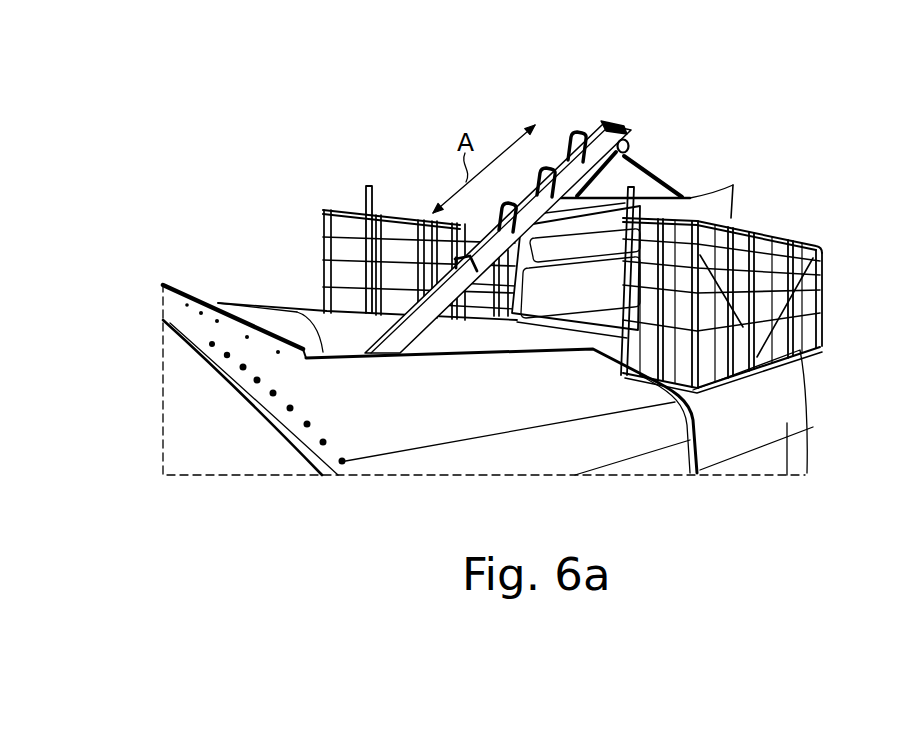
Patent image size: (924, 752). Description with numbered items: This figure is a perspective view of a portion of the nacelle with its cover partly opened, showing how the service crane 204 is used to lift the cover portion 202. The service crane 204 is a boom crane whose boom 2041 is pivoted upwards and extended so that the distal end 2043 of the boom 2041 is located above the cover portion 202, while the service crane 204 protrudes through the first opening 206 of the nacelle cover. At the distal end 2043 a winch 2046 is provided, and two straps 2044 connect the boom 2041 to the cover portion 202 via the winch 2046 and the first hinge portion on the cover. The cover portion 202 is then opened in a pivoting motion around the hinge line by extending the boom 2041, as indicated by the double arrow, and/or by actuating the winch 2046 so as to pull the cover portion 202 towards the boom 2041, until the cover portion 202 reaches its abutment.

The cover portion 202 is at (718, 212).
The service crane 204 is at (582, 195).
The boom 2041 is at (532, 195).
The distal end of the boom 2043 is at (604, 120).
The straps 2044 is at (627, 179).
The winch 2046 is at (630, 140).
The first opening 206 is at (318, 332).